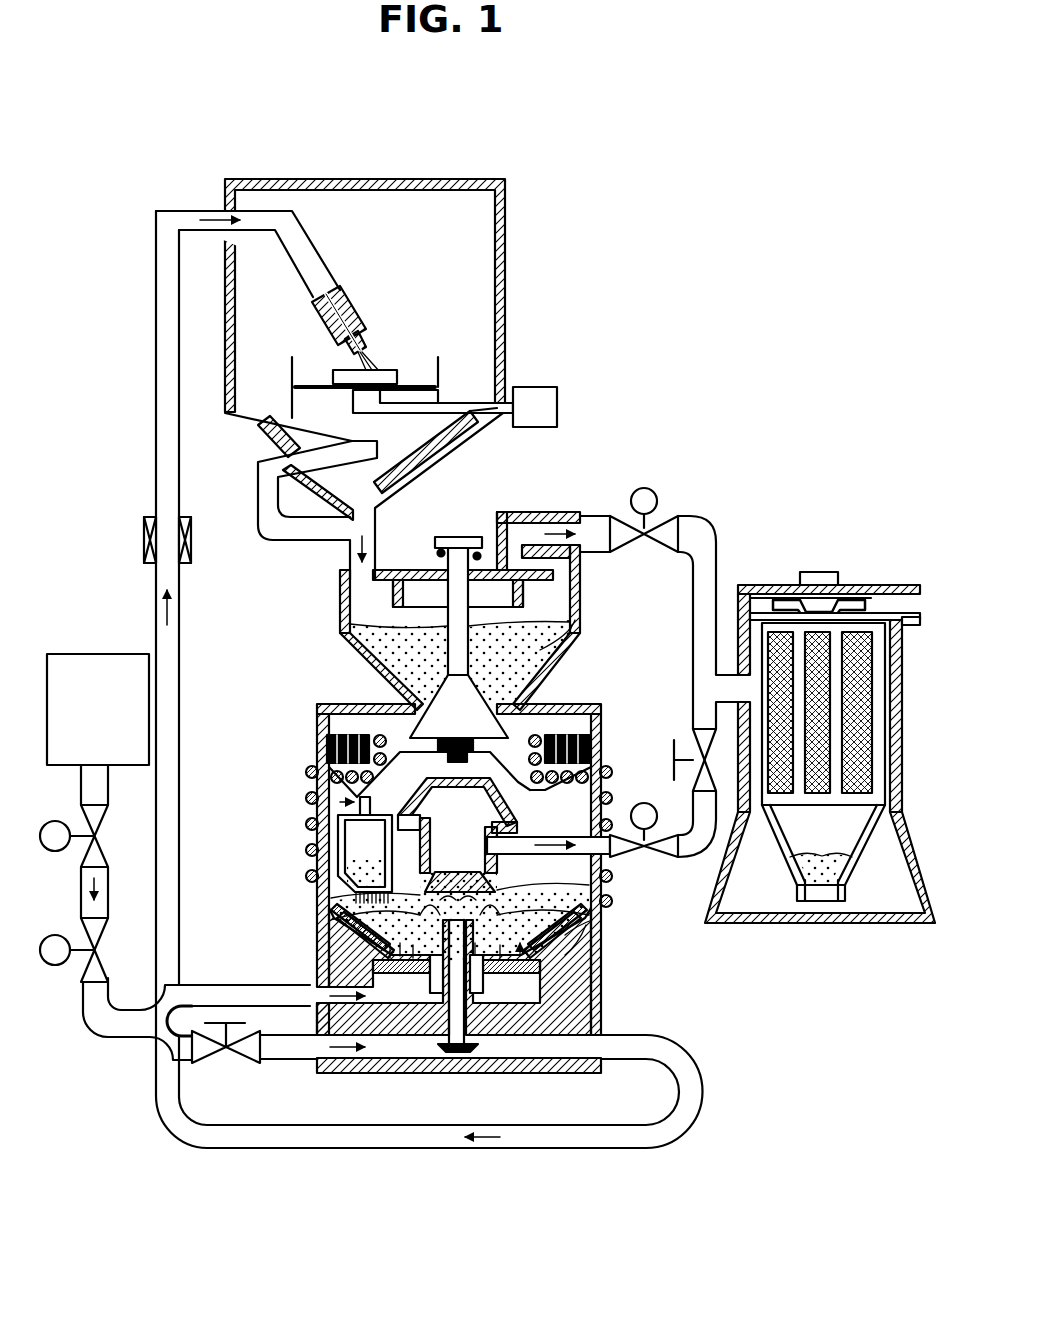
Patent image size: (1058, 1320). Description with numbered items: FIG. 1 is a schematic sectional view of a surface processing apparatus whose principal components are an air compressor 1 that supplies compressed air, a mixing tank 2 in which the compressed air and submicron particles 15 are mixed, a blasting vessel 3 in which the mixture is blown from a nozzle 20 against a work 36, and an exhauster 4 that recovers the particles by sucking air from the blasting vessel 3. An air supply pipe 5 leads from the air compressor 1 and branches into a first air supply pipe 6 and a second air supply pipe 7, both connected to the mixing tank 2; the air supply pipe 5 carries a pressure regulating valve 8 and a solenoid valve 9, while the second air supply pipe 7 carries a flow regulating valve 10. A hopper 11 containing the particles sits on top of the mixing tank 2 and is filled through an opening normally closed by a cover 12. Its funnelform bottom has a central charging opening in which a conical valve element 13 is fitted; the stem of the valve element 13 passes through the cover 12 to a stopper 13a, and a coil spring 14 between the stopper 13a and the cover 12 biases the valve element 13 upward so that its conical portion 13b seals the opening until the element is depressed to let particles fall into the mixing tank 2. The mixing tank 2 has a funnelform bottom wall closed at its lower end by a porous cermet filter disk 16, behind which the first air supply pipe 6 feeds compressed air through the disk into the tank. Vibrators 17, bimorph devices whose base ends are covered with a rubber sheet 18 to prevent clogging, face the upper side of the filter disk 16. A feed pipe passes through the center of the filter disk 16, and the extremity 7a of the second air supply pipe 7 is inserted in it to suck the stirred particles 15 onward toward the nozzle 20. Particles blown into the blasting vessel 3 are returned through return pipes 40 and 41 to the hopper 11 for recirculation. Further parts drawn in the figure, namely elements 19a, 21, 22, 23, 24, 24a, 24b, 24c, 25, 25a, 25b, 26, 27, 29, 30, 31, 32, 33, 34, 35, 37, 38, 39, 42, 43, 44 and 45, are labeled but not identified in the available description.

The air compressor 1 is at (95, 657).
The mixing tank 2 is at (608, 744).
The blasting vessel 3 is at (522, 211).
The exhauster 4 is at (858, 578).
The air supply pipe 5 is at (80, 890).
The first air supply pipe 6 is at (215, 985).
The second air supply pipe 7 is at (278, 1060).
The extremity of the second air supply pipe 7a is at (458, 1053).
The pressure regulating valve 8 is at (81, 817).
The solenoid valve 9 is at (106, 942).
The flow regulating valve 10 is at (226, 1063).
The hopper 11 is at (592, 598).
The cover 12 is at (412, 570).
The conical valve element 13 is at (450, 628).
The stopper 13a is at (462, 537).
The conical portion 13b is at (572, 626).
The coil spring 14 is at (476, 548).
The submicron particles 15 is at (589, 926).
The cermet filter disk 16 is at (400, 974).
The vibrators 17 is at (348, 932).
The rubber sheet 18 is at (335, 912).
The opening 19a is at (598, 918).
The nozzle 20 is at (349, 298).
The valve 21 is at (143, 538).
The partition 22 is at (436, 980).
The cone 23 is at (506, 722).
The electrode 24 is at (318, 825).
The electrode 24a is at (318, 772).
The electrode 24b is at (318, 848).
The electrode 24c is at (318, 877).
The cup 25 is at (365, 858).
The powder bed 25a is at (612, 883).
The valve 25b is at (693, 762).
The pipe 26 is at (558, 836).
The valve 27 is at (645, 812).
The filter 29 is at (862, 690).
The valve 30 is at (812, 592).
The plate 31 is at (908, 616).
The container 32 is at (822, 888).
The coil 33 is at (333, 736).
The coil 34 is at (362, 738).
The electrode 35 is at (316, 798).
The work 36 is at (393, 370).
The rod 37 is at (420, 382).
The drive unit 38 is at (540, 398).
The rod 39 is at (292, 368).
The return pipe 40 is at (376, 528).
The return pipe 41 is at (258, 522).
The duct 42 is at (262, 442).
The pipe 43 is at (580, 516).
The ring 44 is at (393, 593).
The valve 45 is at (660, 520).